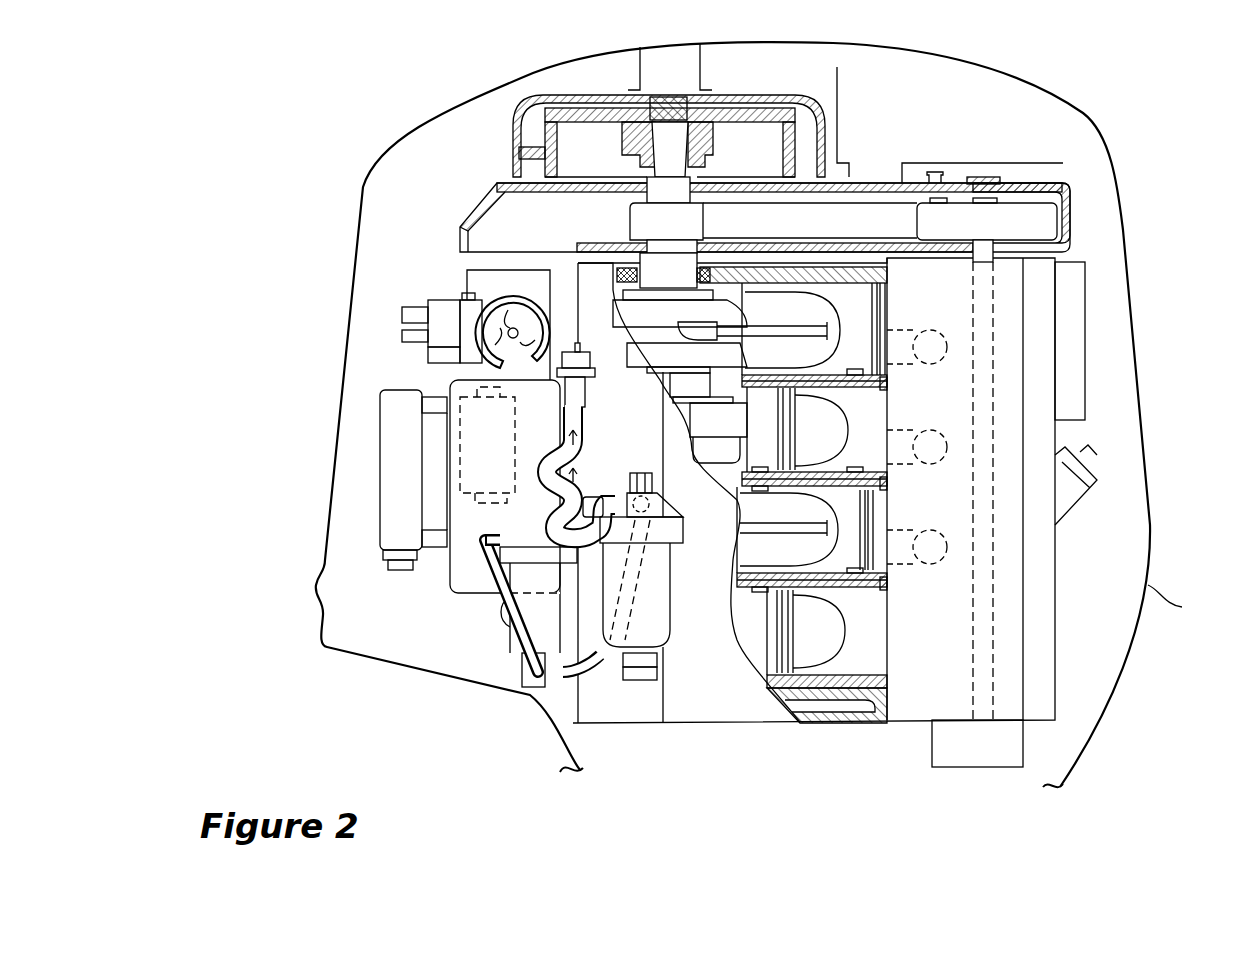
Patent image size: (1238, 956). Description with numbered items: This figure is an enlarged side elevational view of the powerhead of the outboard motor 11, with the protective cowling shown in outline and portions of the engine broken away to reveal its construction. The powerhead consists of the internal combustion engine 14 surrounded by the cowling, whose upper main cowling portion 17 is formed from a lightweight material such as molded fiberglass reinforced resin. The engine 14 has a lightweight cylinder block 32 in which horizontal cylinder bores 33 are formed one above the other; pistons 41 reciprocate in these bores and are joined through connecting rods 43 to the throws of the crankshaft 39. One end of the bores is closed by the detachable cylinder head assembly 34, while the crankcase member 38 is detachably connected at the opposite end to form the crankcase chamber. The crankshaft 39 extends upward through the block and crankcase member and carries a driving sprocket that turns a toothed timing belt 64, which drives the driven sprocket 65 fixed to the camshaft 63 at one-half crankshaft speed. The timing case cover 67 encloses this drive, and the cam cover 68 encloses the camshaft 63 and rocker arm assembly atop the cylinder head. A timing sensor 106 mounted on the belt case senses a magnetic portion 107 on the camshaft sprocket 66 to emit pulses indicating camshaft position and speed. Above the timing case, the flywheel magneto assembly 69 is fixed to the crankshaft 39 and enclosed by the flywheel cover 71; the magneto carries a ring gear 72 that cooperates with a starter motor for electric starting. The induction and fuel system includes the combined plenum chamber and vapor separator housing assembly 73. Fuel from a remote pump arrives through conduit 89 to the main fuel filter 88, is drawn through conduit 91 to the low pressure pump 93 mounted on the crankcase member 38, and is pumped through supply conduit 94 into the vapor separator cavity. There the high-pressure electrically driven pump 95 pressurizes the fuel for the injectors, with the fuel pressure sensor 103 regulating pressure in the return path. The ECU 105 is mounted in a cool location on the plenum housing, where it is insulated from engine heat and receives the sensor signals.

The outboard motor 11 is at (772, 414).
The internal combustion engine 14 is at (1080, 124).
The upper main cowling portion 17 is at (1188, 605).
The flywheel cover 71 is at (748, 95).
The flywheel magneto assembly 69 is at (790, 137).
The ring gear 72 is at (515, 153).
The crankshaft 39 is at (655, 196).
The toothed timing belt 64 is at (645, 222).
The driven sprocket 65 is at (865, 222).
The camshaft sprocket 66 is at (1063, 222).
The timing case cover 67 is at (980, 180).
The timing sensor 106 is at (935, 172).
The magnetic portion 107 is at (935, 196).
The camshaft 63 is at (970, 467).
The cam cover 68 is at (1037, 632).
The cylinder bores 33 is at (808, 287).
The pistons 41 is at (867, 310).
The connecting rods 43 is at (815, 335).
The cylinder block 32 is at (730, 723).
The crankcase member 38 is at (627, 723).
The cylinder head assembly 34 is at (1005, 720).
The plenum chamber and vapor separator outer housing assembly 73 is at (471, 454).
The high-pressure electrically driven pump 95 is at (517, 445).
The ECU 105 is at (387, 491).
The fuel pressure sensor 103 is at (583, 384).
The conduit 91 is at (590, 500).
The main fuel filter 88 is at (663, 603).
The conduit 89 is at (596, 660).
The low pressure pump 93 is at (520, 680).
The supply conduit 94 is at (480, 612).